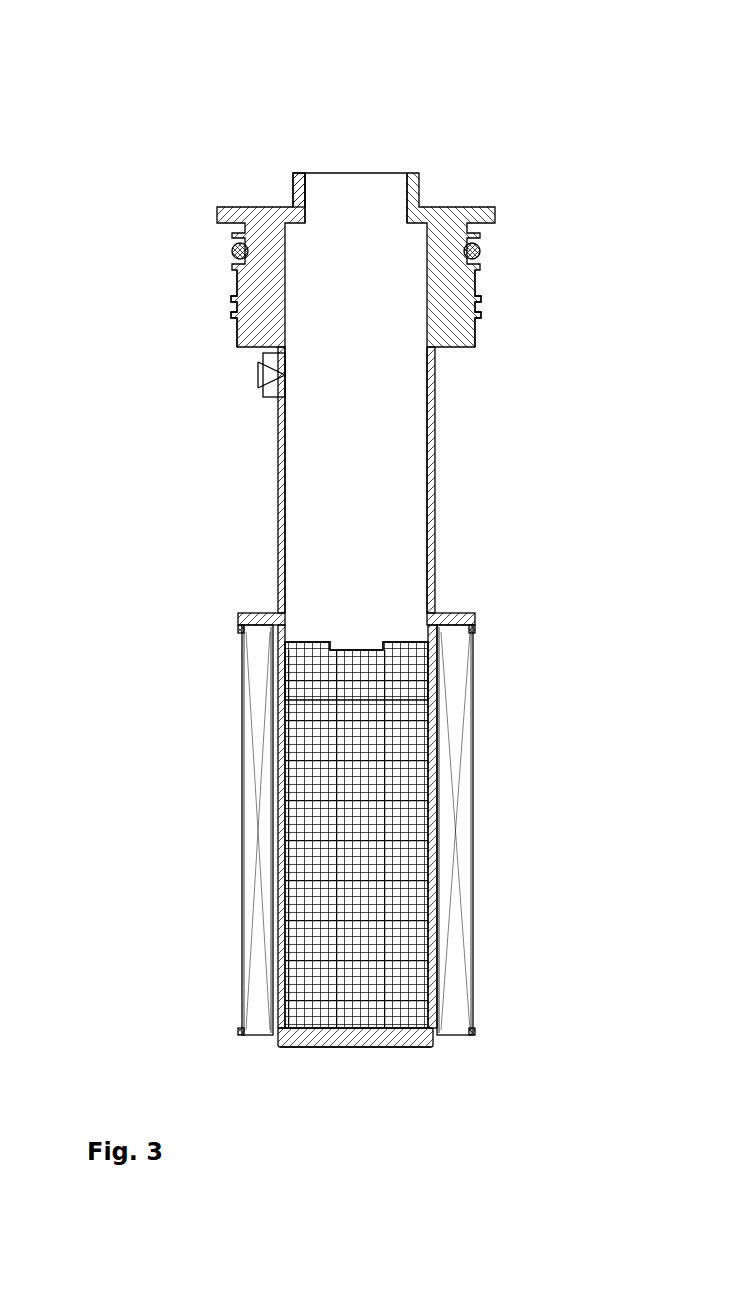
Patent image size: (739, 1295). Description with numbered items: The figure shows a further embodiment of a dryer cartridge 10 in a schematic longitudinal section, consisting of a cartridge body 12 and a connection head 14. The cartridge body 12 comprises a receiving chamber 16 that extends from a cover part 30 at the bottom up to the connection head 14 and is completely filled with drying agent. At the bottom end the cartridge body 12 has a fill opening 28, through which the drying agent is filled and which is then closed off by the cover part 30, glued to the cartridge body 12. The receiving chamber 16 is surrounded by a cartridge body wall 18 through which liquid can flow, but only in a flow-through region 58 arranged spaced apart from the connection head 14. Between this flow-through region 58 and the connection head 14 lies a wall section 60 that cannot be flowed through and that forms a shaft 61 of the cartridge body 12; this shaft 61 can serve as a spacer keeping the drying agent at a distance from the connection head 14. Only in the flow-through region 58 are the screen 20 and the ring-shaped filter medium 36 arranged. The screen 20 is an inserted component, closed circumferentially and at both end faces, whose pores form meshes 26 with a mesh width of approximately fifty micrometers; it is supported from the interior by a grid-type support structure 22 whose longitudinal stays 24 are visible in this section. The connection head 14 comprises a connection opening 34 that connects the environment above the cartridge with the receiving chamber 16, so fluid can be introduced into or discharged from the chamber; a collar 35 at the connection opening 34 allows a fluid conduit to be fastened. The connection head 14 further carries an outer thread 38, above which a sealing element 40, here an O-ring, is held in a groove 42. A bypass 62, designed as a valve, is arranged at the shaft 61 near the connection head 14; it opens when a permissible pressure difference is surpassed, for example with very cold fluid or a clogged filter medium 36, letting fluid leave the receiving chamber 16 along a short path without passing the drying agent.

The dryer cartridge 10 is at (324, 567).
The cartridge body 12 is at (318, 818).
The connection head 14 is at (365, 362).
The receiving chamber 16 is at (370, 646).
The cartridge body wall 18 is at (215, 886).
The screen 20 is at (300, 672).
The grid-type support structure 22 is at (285, 733).
The longitudinal stays 24 is at (432, 826).
The meshes 26 is at (316, 824).
The fill opening 28 is at (372, 1045).
The cover part 30 is at (316, 1045).
The connection opening 34 is at (358, 188).
The collar 35 is at (293, 183).
The filter medium 36 is at (252, 960).
The outer thread 38 is at (232, 305).
The sealing element 40 is at (235, 252).
The groove 42 is at (483, 252).
The flow-through region 58 is at (475, 625).
The wall section 60 is at (475, 347).
The shaft 61 is at (278, 482).
The bypass 62 is at (252, 375).